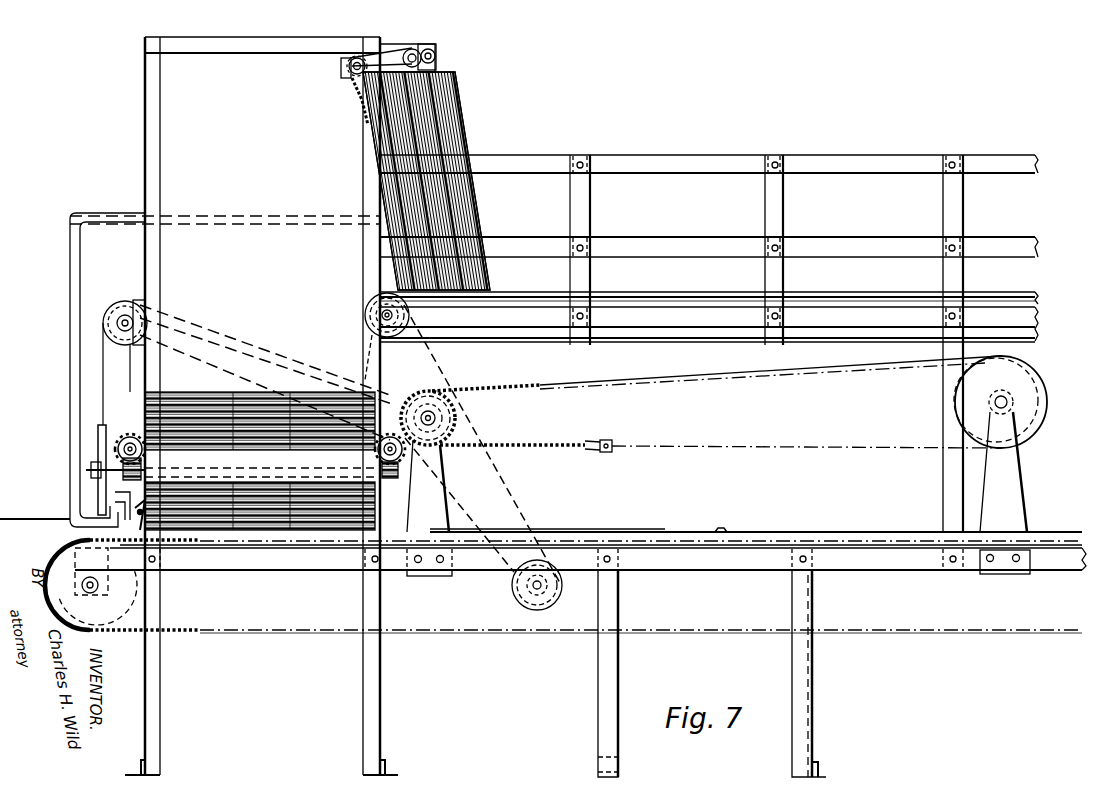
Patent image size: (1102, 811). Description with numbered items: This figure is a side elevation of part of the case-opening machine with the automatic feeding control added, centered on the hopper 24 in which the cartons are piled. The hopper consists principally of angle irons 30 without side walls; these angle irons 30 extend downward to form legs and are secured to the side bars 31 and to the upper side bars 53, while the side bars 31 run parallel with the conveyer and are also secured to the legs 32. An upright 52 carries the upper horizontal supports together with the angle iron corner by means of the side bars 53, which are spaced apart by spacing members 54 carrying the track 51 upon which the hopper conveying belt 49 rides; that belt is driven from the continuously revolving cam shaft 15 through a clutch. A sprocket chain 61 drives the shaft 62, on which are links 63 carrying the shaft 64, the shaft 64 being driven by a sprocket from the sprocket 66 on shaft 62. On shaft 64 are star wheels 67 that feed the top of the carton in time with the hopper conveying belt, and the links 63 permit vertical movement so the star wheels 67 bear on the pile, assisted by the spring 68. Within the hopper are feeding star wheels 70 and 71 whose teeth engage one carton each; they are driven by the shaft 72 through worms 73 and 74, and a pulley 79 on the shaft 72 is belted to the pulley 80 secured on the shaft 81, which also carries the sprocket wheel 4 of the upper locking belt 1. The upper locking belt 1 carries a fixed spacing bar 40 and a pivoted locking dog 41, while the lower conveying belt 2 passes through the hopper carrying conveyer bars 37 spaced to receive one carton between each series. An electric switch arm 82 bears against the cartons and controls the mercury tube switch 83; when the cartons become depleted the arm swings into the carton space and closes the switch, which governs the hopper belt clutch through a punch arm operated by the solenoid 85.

The upper locking belt 1 is at (708, 444).
The lower conveying belt 2 is at (780, 531).
The sprocket wheel 4 is at (445, 395).
The cam shaft 15 is at (545, 586).
The hopper 24 is at (134, 332).
The angle iron 30 is at (362, 179).
The side bar 31 is at (298, 571).
The leg 32 is at (612, 698).
The conveyer bar 37 is at (720, 531).
The fixed spacing bar 40 is at (435, 447).
The locking dog 41 is at (592, 450).
The hopper conveying belt 49 is at (588, 341).
The track 51 is at (518, 297).
The upright 52 is at (945, 370).
The side bar 53 is at (690, 318).
The spacing member 54 is at (583, 314).
The sprocket chain 61 is at (380, 268).
The shaft 62 is at (436, 56).
The link 63 is at (342, 66).
The shaft 64 is at (352, 58).
The sprocket 66 is at (425, 50).
The star wheel 67 is at (345, 76).
The spring 68 is at (360, 104).
The feeding star wheel 70 is at (125, 435).
The feeding star wheel 71 is at (391, 435).
The shaft 72 is at (190, 470).
The worm 73 is at (150, 470).
The worm 74 is at (392, 480).
The pulley 79 is at (100, 440).
The pulley 80 is at (430, 398).
The shaft 81 is at (436, 417).
The electric switch arm 82 is at (135, 515).
The mercury tube switch 83 is at (115, 497).
The solenoid 85 is at (400, 253).